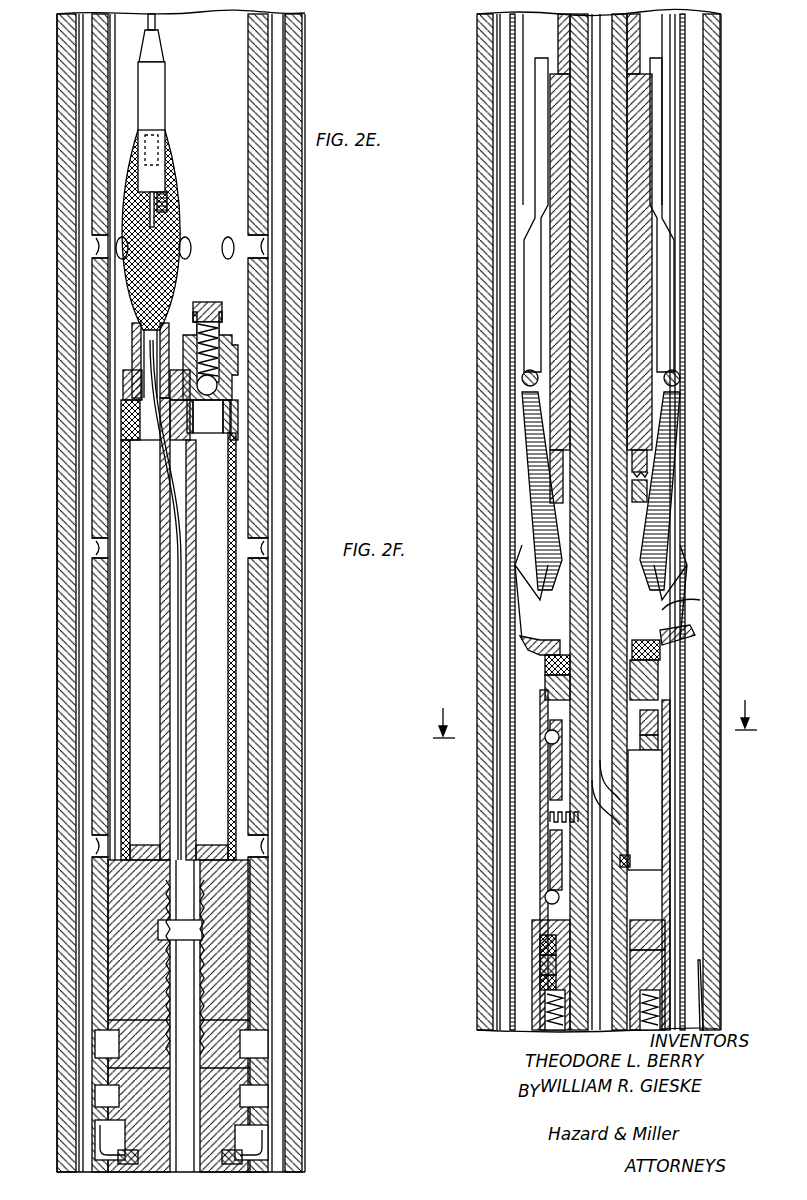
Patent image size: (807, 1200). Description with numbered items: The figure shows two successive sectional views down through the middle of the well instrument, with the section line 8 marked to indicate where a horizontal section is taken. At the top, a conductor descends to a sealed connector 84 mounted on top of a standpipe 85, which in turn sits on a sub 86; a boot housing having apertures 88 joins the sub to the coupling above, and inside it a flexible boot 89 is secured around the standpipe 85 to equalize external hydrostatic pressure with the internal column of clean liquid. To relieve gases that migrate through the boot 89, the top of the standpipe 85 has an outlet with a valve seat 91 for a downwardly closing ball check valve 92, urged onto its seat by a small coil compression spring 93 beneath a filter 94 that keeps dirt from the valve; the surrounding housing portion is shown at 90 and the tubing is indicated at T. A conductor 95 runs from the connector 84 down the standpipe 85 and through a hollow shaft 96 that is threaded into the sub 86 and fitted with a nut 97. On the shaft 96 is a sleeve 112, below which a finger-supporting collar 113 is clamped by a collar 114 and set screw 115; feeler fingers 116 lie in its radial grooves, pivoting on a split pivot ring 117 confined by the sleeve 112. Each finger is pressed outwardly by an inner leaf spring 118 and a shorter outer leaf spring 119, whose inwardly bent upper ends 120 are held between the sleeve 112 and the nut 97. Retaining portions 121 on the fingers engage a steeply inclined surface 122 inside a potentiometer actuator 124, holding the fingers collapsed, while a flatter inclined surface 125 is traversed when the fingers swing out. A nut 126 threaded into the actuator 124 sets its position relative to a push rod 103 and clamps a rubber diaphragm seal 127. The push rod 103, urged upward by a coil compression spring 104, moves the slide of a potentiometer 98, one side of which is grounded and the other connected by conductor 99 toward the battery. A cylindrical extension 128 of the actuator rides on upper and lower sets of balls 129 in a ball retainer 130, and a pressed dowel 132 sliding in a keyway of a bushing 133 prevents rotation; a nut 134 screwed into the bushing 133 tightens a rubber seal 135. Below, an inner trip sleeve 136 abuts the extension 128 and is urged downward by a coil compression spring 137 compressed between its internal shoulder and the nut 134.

In FIG. 2E, the sealed connector 84 is at (128, 238).
In FIG. 2E, the apertures 88 is at (100, 255).
In FIG. 2E, the filter 94 is at (225, 308).
In FIG. 2E, the coil compression spring 93 is at (228, 335).
In FIG. 2E, the valve housing 90 is at (236, 350).
In FIG. 2E, the ball check valve 92 is at (232, 383).
In FIG. 2E, the valve seat 91 is at (235, 398).
In FIG. 2E, the standpipe 85 is at (190, 490).
In FIG. 2E, the conductor 95 is at (180, 592).
In FIG. 2E, the flexible boot 89 is at (236, 642).
In FIG. 2E, the tubing T is at (57, 700).
In FIG. 2F, the tubing T is at (483, 40).
In FIG. 2E, the sub 86 is at (225, 940).
In FIG. 2E, the hollow shaft 96 is at (262, 1026).
In FIG. 2F, the hollow shaft 96 is at (618, 170).
In FIG. 2E, the nut 97 is at (262, 1080).
In FIG. 2E, the inwardly bent upper ends 120 is at (270, 1136).
In FIG. 2E, the sleeve 112 is at (268, 1160).
In FIG. 2F, the sleeve 112 is at (642, 88).
In FIG. 2F, the outer leaf spring 119 is at (522, 172).
In FIG. 2F, the inner leaf spring 118 is at (530, 204).
In FIG. 2F, the split pivot ring 117 is at (520, 385).
In FIG. 2F, the finger-supporting collar 113 is at (645, 395).
In FIG. 2F, the feeler fingers 116 is at (527, 432).
In FIG. 2F, the set screw 115 is at (660, 472).
In FIG. 2F, the collar 114 is at (658, 492).
In FIG. 2F, the flatter inclined surface 125 is at (690, 625).
In FIG. 2F, the potentiometer actuator 124 is at (682, 637).
In FIG. 2F, the steeply inclined surface 122 is at (660, 656).
In FIG. 2F, the retaining portions 121 is at (555, 657).
In FIG. 2F, the rubber diaphragm seal 127 is at (560, 672).
In FIG. 2F, the nut 126 is at (545, 697).
In FIG. 2F, the balls 129 is at (548, 742).
In FIG. 2F, the push rod 103 is at (665, 742).
In FIG. 2F, the coil compression spring 104 is at (665, 757).
In FIG. 2F, the ball retainer 130 is at (552, 793).
In FIG. 2F, the cylindrical extension 128 is at (552, 818).
In FIG. 2F, the potentiometer 98 is at (640, 812).
In FIG. 2F, the conductor 99 is at (640, 862).
In FIG. 2F, the pressed dowel 132 is at (660, 937).
In FIG. 2F, the rubber seal 135 is at (550, 947).
In FIG. 2F, the bushing 133 is at (545, 966).
In FIG. 2F, the nut 134 is at (545, 990).
In FIG. 2F, the inner trip sleeve 136 is at (700, 1005).
In FIG. 2F, the coil compression spring 137 is at (545, 1015).
In FIG. 2F, the section line 8 is at (587, 719).